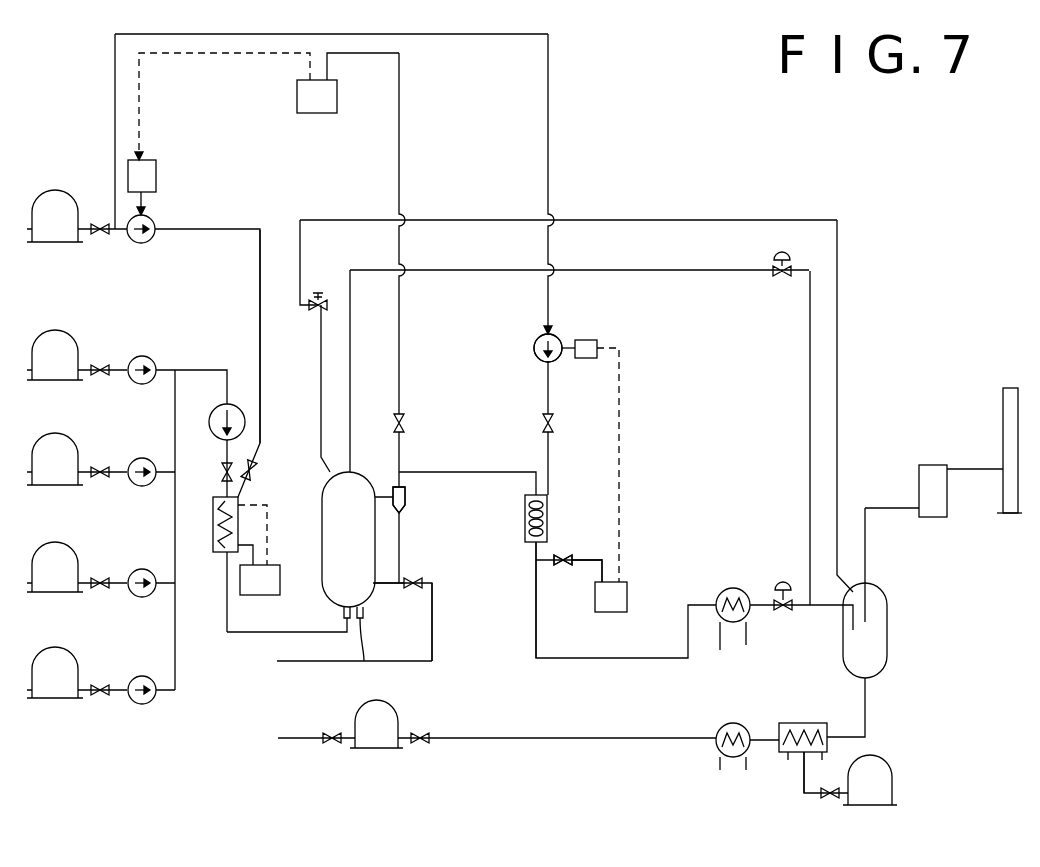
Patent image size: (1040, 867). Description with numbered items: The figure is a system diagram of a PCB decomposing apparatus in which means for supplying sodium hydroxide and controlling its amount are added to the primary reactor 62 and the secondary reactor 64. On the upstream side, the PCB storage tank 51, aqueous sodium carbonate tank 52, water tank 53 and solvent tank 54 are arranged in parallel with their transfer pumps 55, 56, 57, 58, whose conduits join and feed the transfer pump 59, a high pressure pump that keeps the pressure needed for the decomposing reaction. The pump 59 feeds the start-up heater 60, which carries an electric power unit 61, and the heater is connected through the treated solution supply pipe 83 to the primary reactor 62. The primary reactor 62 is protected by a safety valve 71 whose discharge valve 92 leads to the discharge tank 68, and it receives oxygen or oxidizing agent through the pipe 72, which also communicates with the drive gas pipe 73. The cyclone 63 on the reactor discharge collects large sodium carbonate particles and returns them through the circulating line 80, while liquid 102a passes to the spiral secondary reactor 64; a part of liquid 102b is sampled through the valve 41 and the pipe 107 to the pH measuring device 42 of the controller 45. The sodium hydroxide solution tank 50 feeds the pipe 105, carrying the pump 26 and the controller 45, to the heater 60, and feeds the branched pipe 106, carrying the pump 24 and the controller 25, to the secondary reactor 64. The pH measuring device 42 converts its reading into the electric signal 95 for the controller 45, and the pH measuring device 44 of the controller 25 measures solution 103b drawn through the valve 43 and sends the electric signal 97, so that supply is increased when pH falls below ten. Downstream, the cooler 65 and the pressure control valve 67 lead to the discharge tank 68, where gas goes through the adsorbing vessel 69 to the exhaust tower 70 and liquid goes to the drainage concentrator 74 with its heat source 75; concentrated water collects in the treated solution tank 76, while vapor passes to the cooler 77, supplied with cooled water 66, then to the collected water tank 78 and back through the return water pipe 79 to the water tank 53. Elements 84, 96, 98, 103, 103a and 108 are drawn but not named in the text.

The pump 24 is at (534, 348).
The controller 25 is at (590, 340).
The pump 26 is at (144, 243).
The valve 41 is at (407, 425).
The pH measuring device 42 is at (305, 113).
The valve 43 is at (553, 428).
The pH measuring device 44 is at (627, 586).
The controller 45 is at (156, 178).
The sodium hydroxide solution tank 50 is at (47, 190).
The PCB storage tank 51 is at (57, 330).
The aqueous sodium carbonate tank 52 is at (55, 442).
The water tank 53 is at (55, 548).
The solvent tank 54 is at (54, 656).
The transfer pump 55 is at (143, 356).
The transfer pump 56 is at (143, 458).
The transfer pump 57 is at (143, 569).
The transfer pump 58 is at (143, 676).
The transfer pump 59 is at (211, 432).
The start-up heater 60 is at (213, 540).
The power unit 61 is at (258, 585).
The primary reactor 62 is at (328, 527).
The cyclone 63 is at (404, 512).
The secondary reactor 64 is at (549, 519).
The cooler 65 is at (746, 618).
The cooled water 66 is at (720, 650).
The pressure control valve 67 is at (782, 582).
The discharge tank 68 is at (876, 665).
The adsorbing vessel 69 is at (935, 517).
The exhaust tower 70 is at (1003, 410).
The safety valve 71 is at (320, 294).
The pipe 72 is at (290, 661).
The drive gas pipe 73 is at (432, 644).
The drainage concentrator 74 is at (803, 723).
The heat source 75 is at (822, 755).
The treated solution tank 76 is at (873, 778).
The cooler 77 is at (719, 750).
The collected water tank 78 is at (385, 749).
The return water pipe 79 is at (298, 739).
The circulating line 80 is at (377, 585).
The treated solution supply pipe 83 is at (227, 620).
The control valve 84 is at (780, 255).
The discharge valve 92 is at (470, 220).
The electric signal 95 is at (146, 97).
The control signal line 96 is at (148, 199).
The electric signal 97 is at (620, 445).
The pump 98 is at (558, 360).
The liquid 102a is at (405, 490).
The liquid 102b is at (399, 462).
The line 103 is at (537, 555).
The line 103a is at (537, 590).
The solution 103b is at (593, 557).
The pipe 105 is at (260, 292).
The branched pipe 106 is at (548, 96).
The pipe 107 is at (399, 312).
The line 108 is at (547, 386).